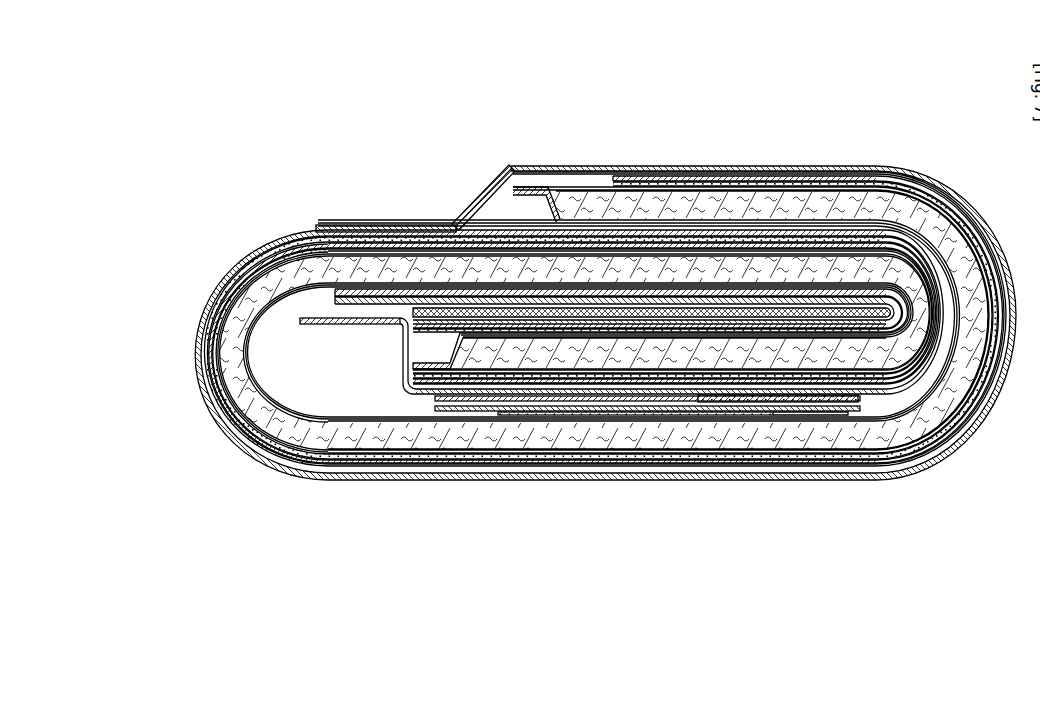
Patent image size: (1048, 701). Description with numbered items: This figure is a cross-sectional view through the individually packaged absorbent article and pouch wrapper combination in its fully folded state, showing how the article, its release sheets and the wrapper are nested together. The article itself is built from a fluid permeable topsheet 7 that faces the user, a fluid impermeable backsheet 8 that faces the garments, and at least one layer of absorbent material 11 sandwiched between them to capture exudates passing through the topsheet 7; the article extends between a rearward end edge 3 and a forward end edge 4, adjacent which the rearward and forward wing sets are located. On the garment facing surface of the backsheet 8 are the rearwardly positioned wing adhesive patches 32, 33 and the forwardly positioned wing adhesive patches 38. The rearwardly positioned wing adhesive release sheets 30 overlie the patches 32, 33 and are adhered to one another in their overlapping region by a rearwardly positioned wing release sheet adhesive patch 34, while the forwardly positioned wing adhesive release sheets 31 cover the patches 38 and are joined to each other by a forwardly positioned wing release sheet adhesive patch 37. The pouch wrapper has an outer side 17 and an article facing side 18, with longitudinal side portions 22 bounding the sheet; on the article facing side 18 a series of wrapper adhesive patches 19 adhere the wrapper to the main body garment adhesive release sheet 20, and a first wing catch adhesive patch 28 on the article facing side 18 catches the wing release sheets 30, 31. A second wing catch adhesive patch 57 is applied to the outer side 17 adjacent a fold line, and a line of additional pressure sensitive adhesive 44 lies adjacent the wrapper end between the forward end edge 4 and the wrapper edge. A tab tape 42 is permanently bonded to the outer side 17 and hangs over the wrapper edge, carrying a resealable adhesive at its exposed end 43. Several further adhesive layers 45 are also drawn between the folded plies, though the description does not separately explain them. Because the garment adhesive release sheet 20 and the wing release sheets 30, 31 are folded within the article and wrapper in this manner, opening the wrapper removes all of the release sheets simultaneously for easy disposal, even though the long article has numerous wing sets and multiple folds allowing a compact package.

The rearward end edge 3 is at (406, 358).
The forward end edge 4 is at (472, 186).
The topsheet 7 is at (398, 350).
The backsheet 8 is at (404, 384).
The absorbent material 11 is at (228, 372).
The outer side of the wrapper 17 is at (845, 166).
The article facing side of the wrapper 18 is at (886, 161).
The wrapper adhesive patches 19 is at (546, 232).
The main body garment adhesive release sheet 20 is at (628, 171).
The longitudinal side portions of the wrapper 22 is at (790, 176).
The first wing catch adhesive patch 28 is at (352, 313).
The wing adhesive release sheets 30 is at (353, 290).
The forwardly positioned wing adhesive release sheet 31 is at (677, 391).
The wing adhesive 32 is at (596, 286).
The wing adhesive 33 is at (668, 323).
The rearwardly positioned wing release sheet adhesive patch 34 is at (405, 297).
The forwardly positioned wing release sheet adhesive patch 37 is at (808, 401).
The wing adhesive patches 38 is at (735, 391).
The tab tape 42 is at (345, 212).
The exposed end of the tab tape 43 is at (318, 220).
The line of additional pressure sensitive adhesive 44 is at (432, 225).
The adhesive layer 45 is at (470, 238).
The second wing catch adhesive patch 57 is at (838, 390).